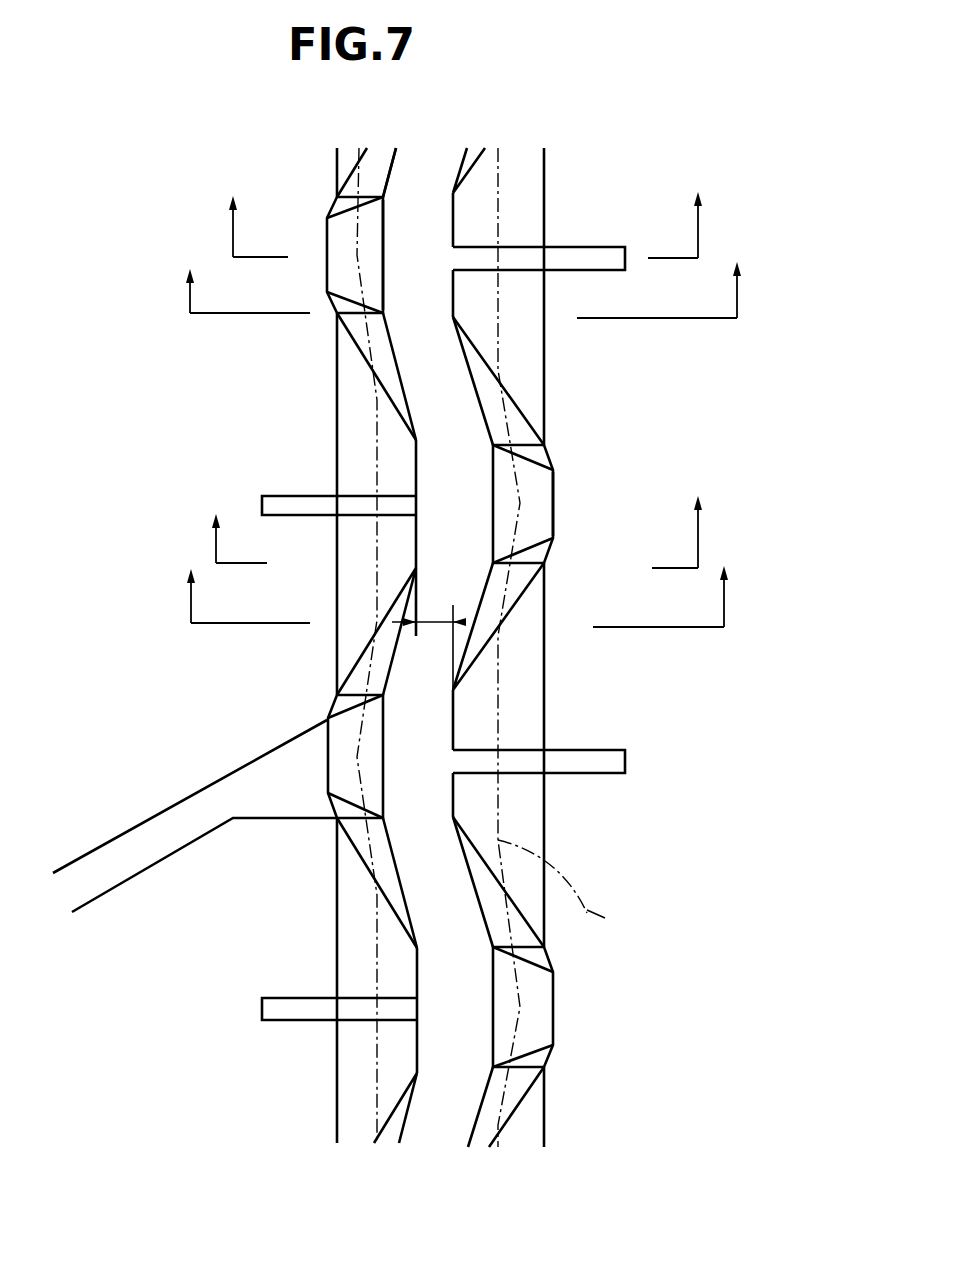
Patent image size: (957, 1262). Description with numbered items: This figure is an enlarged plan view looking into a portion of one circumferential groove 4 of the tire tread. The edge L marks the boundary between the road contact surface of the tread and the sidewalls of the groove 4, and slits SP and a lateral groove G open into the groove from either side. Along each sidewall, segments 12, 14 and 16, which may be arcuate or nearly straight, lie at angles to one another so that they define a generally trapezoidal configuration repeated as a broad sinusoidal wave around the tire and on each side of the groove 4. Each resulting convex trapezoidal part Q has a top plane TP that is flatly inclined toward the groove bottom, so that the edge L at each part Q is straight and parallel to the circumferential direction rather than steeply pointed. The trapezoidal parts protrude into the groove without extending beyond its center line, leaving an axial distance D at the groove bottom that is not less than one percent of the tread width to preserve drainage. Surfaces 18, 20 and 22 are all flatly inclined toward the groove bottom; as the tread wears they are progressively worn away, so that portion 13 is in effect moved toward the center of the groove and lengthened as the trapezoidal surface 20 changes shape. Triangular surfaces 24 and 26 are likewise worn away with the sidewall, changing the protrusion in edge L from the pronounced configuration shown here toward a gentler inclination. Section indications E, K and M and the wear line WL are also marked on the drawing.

The circumferential groove 4 is at (282, 413).
The sidewall segment 12 is at (367, 362).
The portion 13 is at (327, 265).
The sidewall segment 14 is at (417, 970).
The sidewall segment 16 is at (382, 613).
The inclined surface 18 is at (343, 203).
The trapezoidal surface 20 is at (372, 240).
The inclined surface 22 is at (338, 303).
The triangular surface 24 is at (380, 173).
The triangular surface 26 is at (383, 352).
The lateral groove G is at (167, 822).
The slit SP is at (278, 495).
The top plane TP is at (357, 410).
The trapezoidal part Q is at (393, 448).
The axial distance D is at (442, 613).
The section E is at (459, 202).
The edge L is at (577, 152).
The section K is at (455, 511).
The section M is at (454, 577).
The 50% wear line WL is at (646, 903).